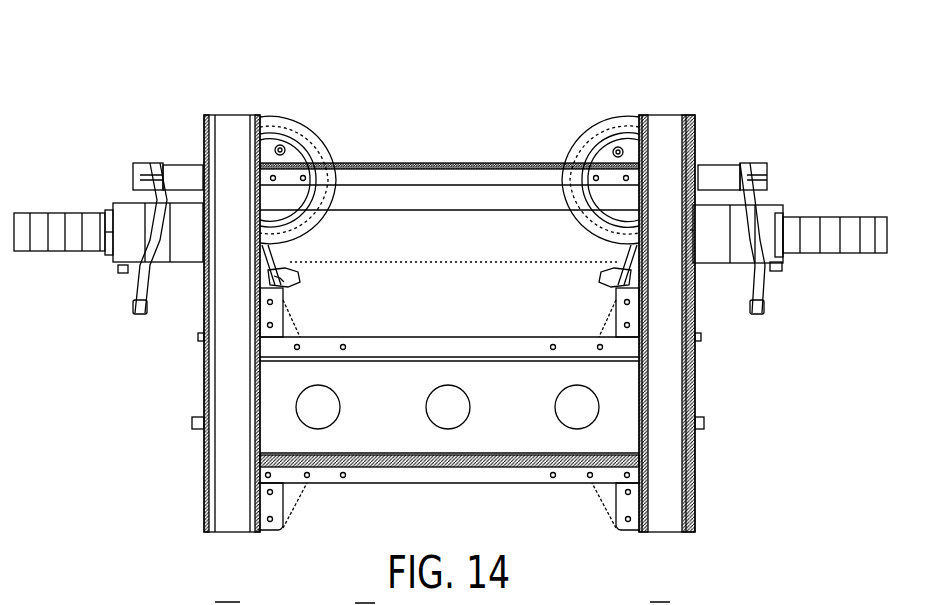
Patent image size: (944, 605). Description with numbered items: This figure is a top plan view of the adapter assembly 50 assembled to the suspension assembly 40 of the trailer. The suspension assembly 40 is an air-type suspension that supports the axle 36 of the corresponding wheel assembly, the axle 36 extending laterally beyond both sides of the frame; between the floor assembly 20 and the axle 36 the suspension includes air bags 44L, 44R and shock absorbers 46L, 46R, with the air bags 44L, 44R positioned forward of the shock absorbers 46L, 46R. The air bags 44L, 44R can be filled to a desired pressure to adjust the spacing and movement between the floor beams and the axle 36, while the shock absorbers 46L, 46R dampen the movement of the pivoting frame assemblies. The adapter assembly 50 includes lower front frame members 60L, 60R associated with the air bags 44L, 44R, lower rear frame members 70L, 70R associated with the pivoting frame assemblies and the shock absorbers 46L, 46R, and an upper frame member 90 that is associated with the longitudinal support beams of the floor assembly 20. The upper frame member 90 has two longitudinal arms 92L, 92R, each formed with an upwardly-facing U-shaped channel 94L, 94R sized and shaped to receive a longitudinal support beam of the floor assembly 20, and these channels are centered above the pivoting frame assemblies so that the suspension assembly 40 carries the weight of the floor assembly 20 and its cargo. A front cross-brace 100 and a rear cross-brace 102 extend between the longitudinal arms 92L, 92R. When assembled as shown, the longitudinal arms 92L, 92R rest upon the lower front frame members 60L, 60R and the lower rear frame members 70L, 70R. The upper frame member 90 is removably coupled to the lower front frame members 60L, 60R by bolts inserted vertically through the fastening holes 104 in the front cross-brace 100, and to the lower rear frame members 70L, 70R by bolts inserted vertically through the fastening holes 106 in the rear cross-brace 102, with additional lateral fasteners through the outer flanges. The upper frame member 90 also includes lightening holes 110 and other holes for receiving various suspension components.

The floor assembly 20 is at (700, 600).
The axle 36 is at (476, 247).
The suspension assembly 40 is at (188, 500).
The air bag 44L is at (272, 114).
The air bag 44R is at (620, 116).
The shock absorber 46L is at (288, 288).
The shock absorber 46R is at (610, 288).
The adapter assembly 50 is at (714, 85).
The lower front frame member 60L is at (318, 127).
The lower front frame member 60R is at (582, 128).
The lower rear frame member 70L is at (300, 505).
The lower rear frame member 70R is at (597, 505).
The upper frame member 90 is at (586, 604).
The longitudinal arm 92L is at (225, 466).
The longitudinal arm 92R is at (670, 474).
The U-shaped channel 94L is at (233, 425).
The U-shaped channel 94R is at (667, 405).
The front cross-brace 100 is at (418, 200).
The rear cross-brace 102 is at (395, 380).
The fastening holes 104 is at (275, 192).
The fastening holes 106 is at (307, 455).
The lightening holes 110 is at (448, 432).